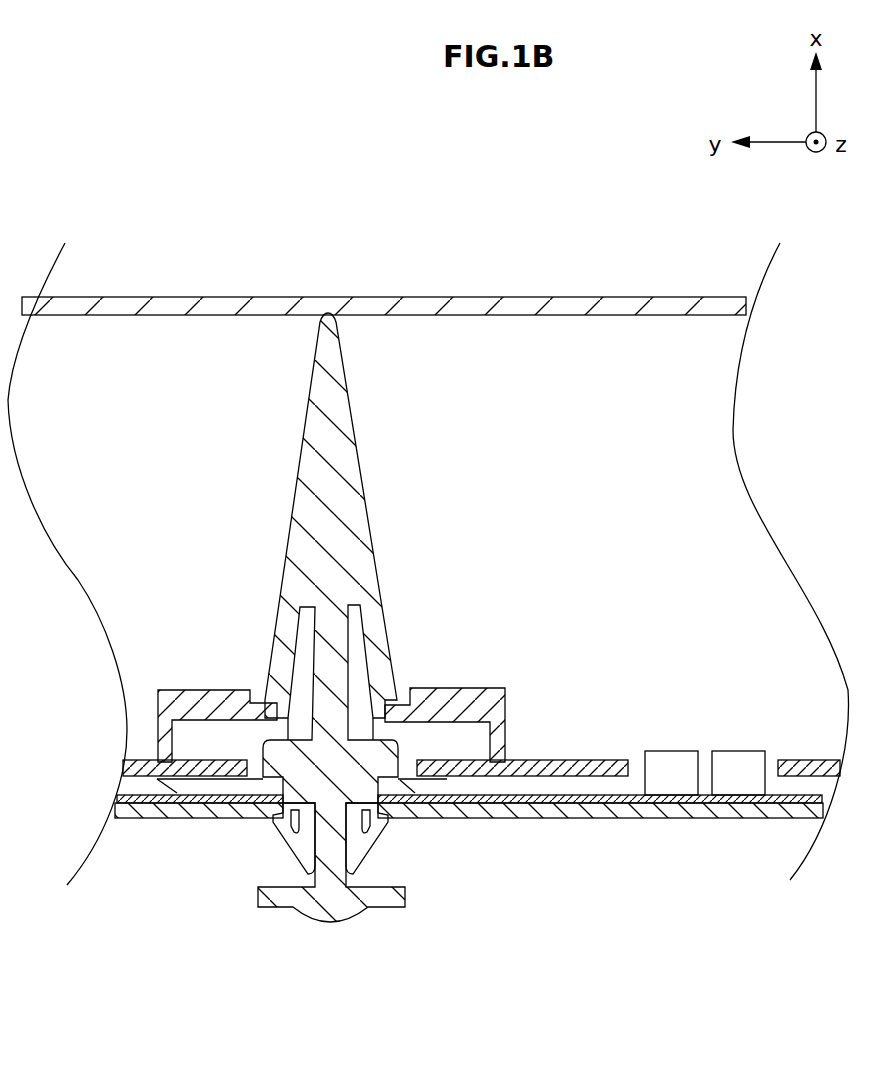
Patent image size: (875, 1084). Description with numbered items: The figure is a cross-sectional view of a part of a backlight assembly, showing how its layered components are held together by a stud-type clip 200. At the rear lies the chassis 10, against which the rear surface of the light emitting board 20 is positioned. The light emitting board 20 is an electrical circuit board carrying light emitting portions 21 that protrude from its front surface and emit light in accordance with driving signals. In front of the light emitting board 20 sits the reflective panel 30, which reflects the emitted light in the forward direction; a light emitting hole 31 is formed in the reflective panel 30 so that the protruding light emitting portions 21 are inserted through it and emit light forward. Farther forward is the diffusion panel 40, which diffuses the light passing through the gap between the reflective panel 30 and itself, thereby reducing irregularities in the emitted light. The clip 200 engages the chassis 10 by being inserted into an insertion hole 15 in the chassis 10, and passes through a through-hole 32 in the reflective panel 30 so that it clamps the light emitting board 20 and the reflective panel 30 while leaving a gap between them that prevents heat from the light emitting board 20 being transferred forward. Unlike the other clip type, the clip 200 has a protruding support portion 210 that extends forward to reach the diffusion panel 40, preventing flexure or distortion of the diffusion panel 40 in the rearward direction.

The chassis 10 is at (605, 818).
The insertion hole 15 is at (302, 815).
The light emitting board 20 is at (668, 803).
The light emitting portions 21 is at (668, 750).
The reflective panel 30 is at (563, 758).
The light emitting hole 31 is at (771, 755).
The through-hole 32 is at (408, 752).
The diffusion panel 40 is at (389, 297).
The clip 200 is at (331, 617).
The support portion 210 is at (347, 400).